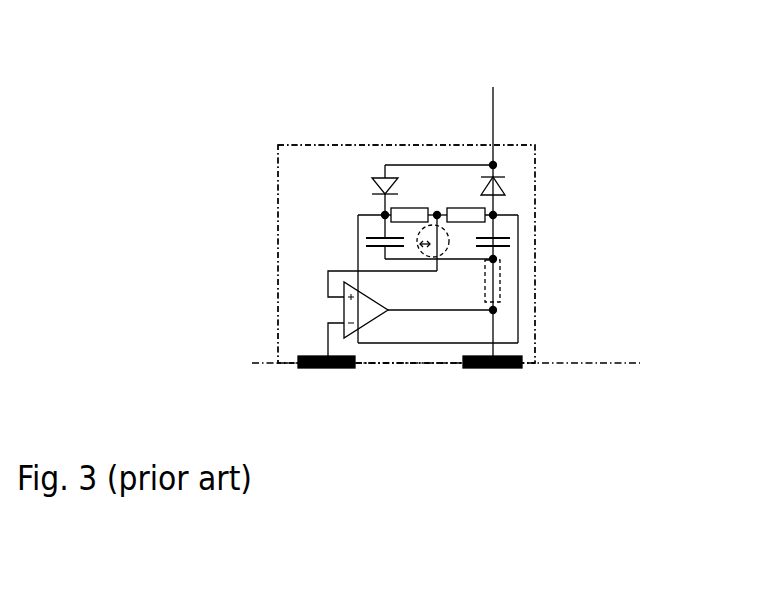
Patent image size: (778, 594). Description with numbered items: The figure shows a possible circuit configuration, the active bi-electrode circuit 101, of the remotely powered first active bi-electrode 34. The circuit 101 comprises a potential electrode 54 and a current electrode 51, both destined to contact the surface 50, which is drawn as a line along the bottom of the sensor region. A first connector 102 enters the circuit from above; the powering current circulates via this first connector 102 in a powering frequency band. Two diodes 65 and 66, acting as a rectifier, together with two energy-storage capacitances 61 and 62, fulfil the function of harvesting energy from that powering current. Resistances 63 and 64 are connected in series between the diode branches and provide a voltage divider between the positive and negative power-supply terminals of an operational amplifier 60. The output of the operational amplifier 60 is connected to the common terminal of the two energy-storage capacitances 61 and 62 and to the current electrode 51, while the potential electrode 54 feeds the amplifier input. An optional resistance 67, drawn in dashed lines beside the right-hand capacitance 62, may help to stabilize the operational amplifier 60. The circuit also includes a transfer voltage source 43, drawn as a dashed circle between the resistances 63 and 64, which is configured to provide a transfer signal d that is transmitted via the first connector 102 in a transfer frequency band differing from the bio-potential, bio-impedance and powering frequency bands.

The first active bi-electrode 34 is at (253, 82).
The active bi-electrode circuit 101 is at (305, 145).
The first connector 102 is at (493, 128).
The diode 65 is at (383, 191).
The diode 66 is at (501, 178).
The resistance 63 is at (384, 212).
The resistance 64 is at (494, 212).
The energy-storage capacitance 61 is at (368, 242).
The energy-storage capacitance 62 is at (508, 239).
The transfer voltage source 43 is at (416, 236).
The optional resistance 67 is at (500, 282).
The operational amplifier 60 is at (342, 313).
The potential electrode 54 is at (298, 357).
The current electrode 51 is at (522, 357).
The surface 50 is at (608, 362).